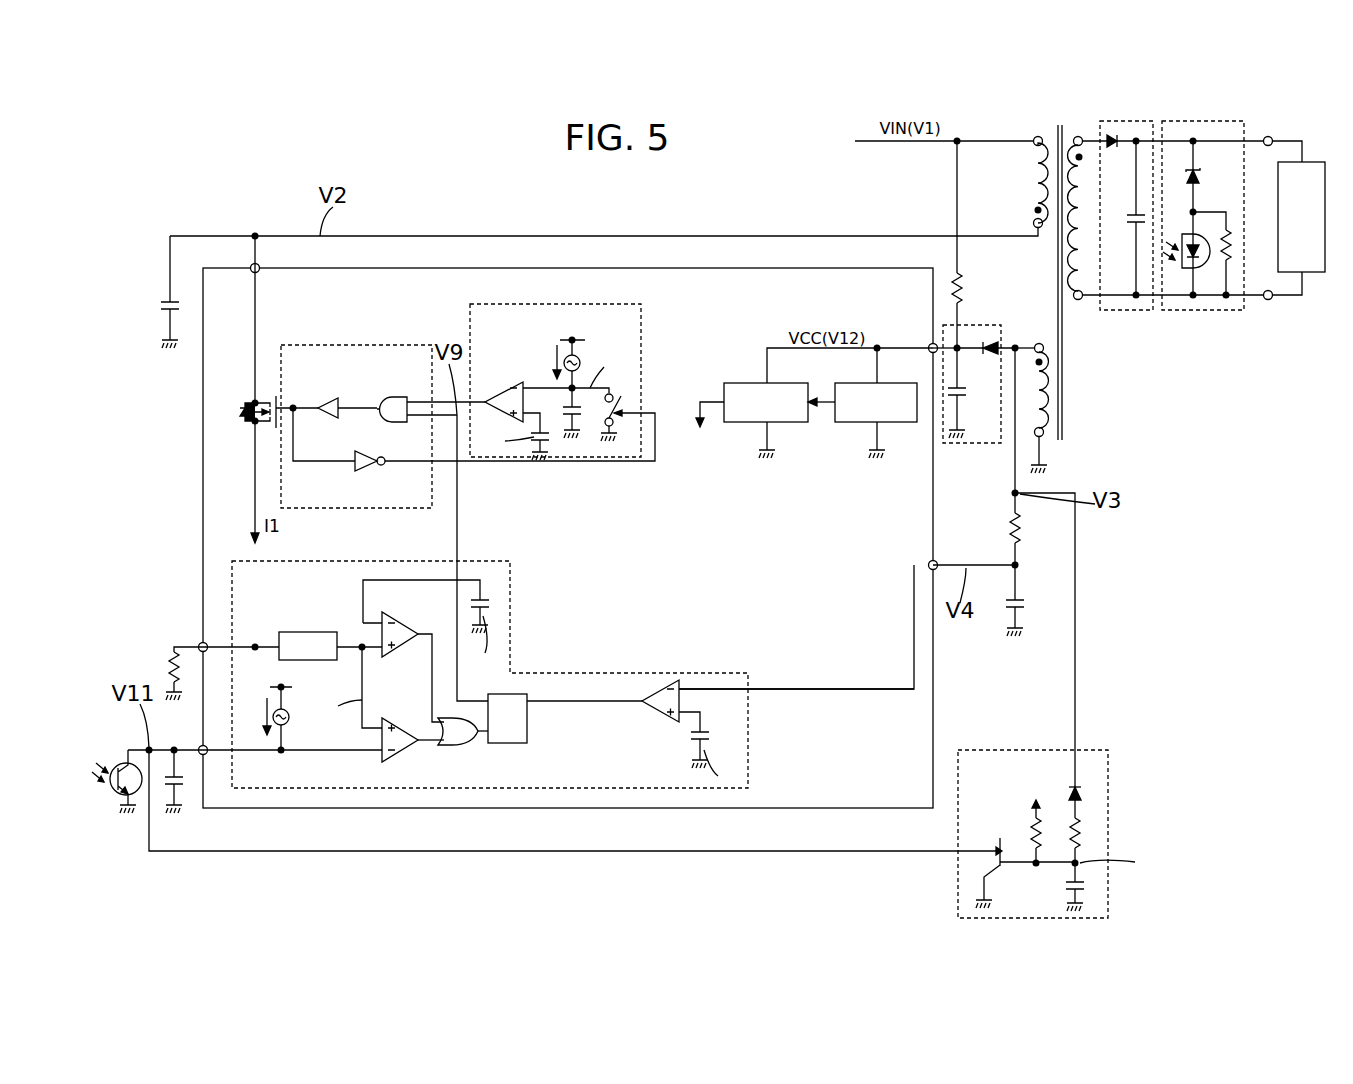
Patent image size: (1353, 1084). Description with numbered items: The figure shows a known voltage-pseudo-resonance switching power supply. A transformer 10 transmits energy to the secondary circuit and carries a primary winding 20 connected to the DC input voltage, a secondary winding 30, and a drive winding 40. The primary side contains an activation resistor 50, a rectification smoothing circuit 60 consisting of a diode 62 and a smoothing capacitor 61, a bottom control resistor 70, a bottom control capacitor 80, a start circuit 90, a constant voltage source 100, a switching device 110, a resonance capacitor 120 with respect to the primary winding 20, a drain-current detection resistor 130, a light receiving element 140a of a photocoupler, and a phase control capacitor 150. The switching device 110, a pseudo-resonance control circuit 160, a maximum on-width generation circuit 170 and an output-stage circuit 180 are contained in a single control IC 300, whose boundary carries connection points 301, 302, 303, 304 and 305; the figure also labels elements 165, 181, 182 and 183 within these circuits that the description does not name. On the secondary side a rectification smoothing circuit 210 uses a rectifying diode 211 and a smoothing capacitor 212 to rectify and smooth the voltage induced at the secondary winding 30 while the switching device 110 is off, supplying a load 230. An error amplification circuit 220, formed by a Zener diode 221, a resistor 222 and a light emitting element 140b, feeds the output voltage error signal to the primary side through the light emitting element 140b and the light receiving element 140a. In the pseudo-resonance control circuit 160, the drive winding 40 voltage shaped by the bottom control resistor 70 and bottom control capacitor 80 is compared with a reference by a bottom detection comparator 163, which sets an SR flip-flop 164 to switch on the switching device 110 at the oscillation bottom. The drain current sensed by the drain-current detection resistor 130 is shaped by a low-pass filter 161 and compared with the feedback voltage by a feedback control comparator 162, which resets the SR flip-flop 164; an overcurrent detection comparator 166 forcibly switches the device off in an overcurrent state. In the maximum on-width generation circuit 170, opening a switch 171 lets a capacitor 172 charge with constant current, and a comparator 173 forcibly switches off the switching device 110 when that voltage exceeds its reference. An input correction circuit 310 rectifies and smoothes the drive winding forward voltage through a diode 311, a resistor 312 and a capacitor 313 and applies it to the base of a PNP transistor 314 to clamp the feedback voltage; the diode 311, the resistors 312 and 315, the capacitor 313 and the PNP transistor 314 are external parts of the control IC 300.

The transformer 10 is at (1058, 125).
The primary winding 20 is at (1034, 139).
The secondary winding 30 is at (1078, 136).
The drive winding 40 is at (1043, 436).
The activation resistor 50 is at (963, 288).
The rectification smoothing circuit 60 is at (960, 443).
The smoothing capacitor 61 is at (990, 355).
The diode 62 is at (962, 384).
The bottom control resistor 70 is at (1020, 528).
The bottom control capacitor 80 is at (1017, 598).
The start circuit 90 is at (882, 422).
The constant voltage source 100 is at (782, 383).
The switching device 110 is at (254, 400).
The resonance capacitor 120 is at (170, 300).
The drain-current detection resistor 130 is at (172, 660).
The light receiving element of photocoupler 140a is at (117, 765).
The light emitting element of photocoupler 140b is at (1186, 270).
The phase control capacitor 150 is at (180, 786).
The pseudo-resonance control circuit 160 is at (749, 745).
The low-pass filter 161 is at (305, 632).
The feedback control comparator 162 is at (412, 762).
The bottom detection comparator 163 is at (652, 706).
The SR flip-flop 164 is at (506, 744).
The OR gate 165 is at (455, 746).
The overcurrent detection comparator 166 is at (412, 612).
The maximum on-width generation circuit 170 is at (600, 304).
The switch 171 is at (622, 398).
The capacitor 172 is at (570, 420).
The comparator 173 is at (507, 395).
The output-stage circuit 180 is at (300, 345).
The buffer 181 is at (328, 405).
The inverter 182 is at (374, 470).
The AND gate 183 is at (392, 397).
The rectification smoothing circuit 210 is at (1127, 310).
The rectifying diode 211 is at (1113, 135).
The smoothing capacitor 212 is at (1134, 224).
The error amplification circuit 220 is at (1212, 310).
The Zener diode 221 is at (1200, 170).
The resistor 222 is at (1233, 262).
The load 230 is at (1302, 280).
The control IC 300 is at (934, 660).
The terminal 301 is at (253, 263).
The terminal 302 is at (201, 643).
The terminal 303 is at (201, 746).
The terminal 304 is at (928, 565).
The terminal 305 is at (930, 344).
The input correction circuit 310 is at (1092, 750).
The diode 311 is at (1082, 794).
The resistor 312 is at (1082, 833).
The capacitor 313 is at (1083, 890).
The PNP transistor 314 is at (999, 845).
The resistor 315 is at (1036, 850).